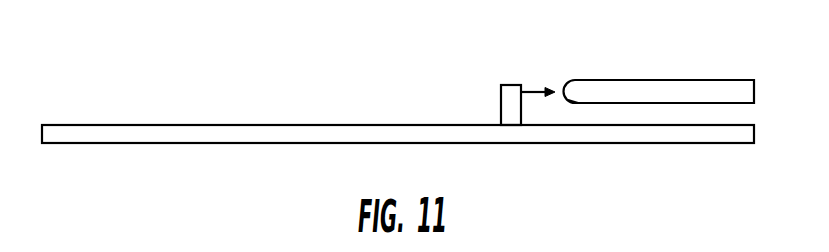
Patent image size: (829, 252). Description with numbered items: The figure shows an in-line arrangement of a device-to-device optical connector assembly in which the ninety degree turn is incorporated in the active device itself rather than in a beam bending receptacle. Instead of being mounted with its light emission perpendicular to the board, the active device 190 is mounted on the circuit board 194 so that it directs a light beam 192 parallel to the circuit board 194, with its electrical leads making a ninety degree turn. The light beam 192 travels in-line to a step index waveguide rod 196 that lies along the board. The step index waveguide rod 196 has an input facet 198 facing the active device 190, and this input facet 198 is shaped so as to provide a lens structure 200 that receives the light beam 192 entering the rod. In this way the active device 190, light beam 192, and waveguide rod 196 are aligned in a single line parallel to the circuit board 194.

The active device 190 is at (509, 118).
The light beam 192 is at (533, 87).
The circuit board 194 is at (296, 133).
The step index waveguide rod 196 is at (712, 88).
The input facet 198 is at (576, 86).
The lens structure 200 is at (570, 102).